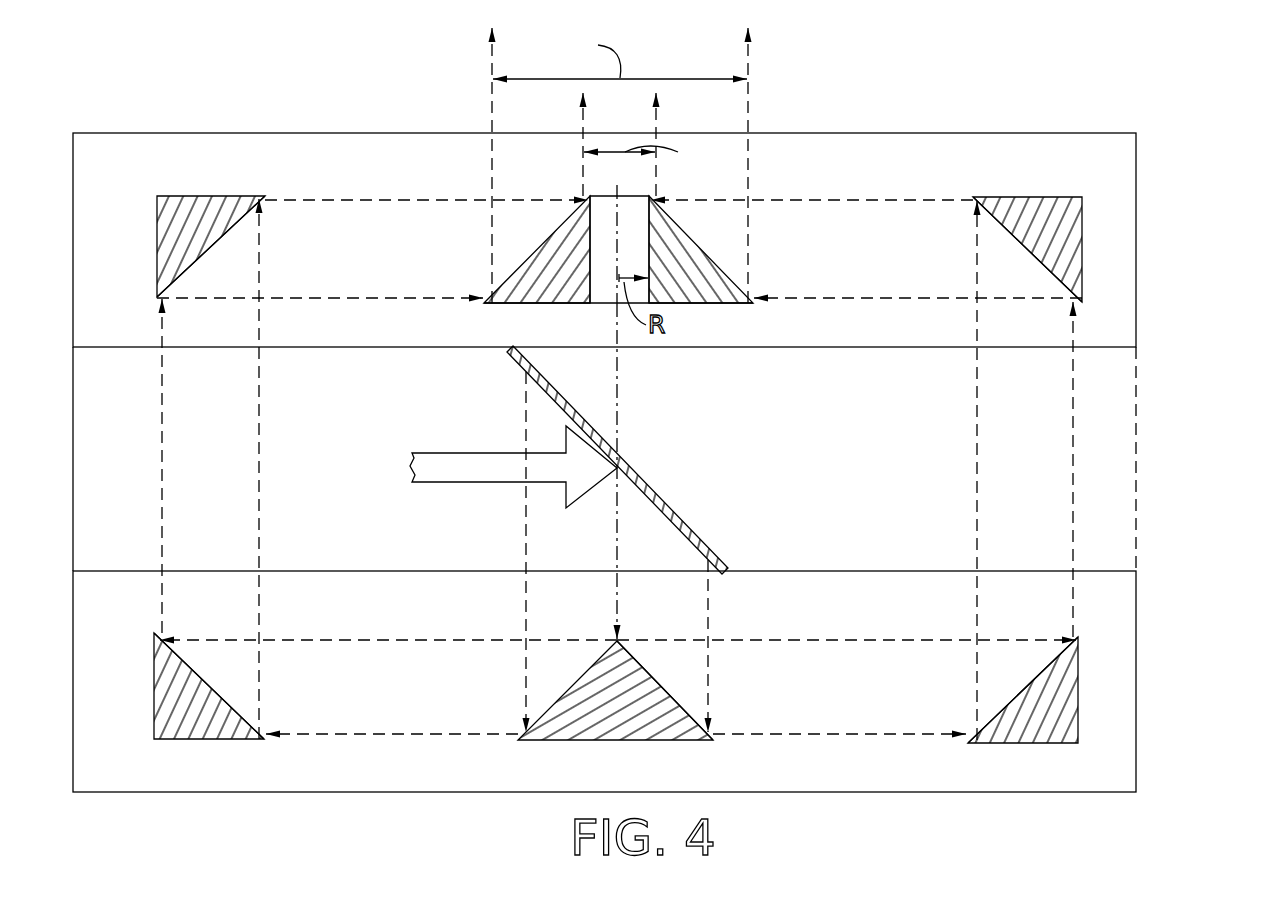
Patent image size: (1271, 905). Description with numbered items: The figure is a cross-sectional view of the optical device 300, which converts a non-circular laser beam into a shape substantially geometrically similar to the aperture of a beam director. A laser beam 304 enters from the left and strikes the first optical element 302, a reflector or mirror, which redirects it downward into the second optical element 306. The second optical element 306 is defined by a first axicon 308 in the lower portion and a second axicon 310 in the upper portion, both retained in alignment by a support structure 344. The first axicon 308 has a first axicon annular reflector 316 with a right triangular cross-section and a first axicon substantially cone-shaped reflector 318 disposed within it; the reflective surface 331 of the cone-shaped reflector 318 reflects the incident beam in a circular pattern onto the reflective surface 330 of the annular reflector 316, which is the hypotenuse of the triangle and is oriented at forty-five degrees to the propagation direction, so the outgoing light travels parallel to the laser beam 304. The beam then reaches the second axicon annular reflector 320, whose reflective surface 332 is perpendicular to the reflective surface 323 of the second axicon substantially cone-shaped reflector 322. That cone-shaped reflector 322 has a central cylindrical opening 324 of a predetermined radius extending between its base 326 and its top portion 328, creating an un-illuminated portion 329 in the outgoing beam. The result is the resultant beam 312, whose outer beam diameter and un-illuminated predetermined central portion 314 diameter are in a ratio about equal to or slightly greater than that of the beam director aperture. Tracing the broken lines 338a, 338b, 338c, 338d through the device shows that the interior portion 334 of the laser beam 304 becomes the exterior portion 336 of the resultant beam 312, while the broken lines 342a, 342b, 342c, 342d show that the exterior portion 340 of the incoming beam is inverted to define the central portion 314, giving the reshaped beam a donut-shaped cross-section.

The optical device 300 is at (868, 56).
The first optical element 302 is at (650, 483).
The laser beam 304 is at (453, 452).
The second optical element 306 is at (1142, 472).
The first axicon 308 is at (1052, 797).
The second axicon 310 is at (988, 131).
The resultant beam 312 is at (750, 99).
The predetermined central portion 314 is at (580, 123).
The first axicon annular reflector 316 is at (632, 710).
The first axicon substantially cone-shaped reflector 318 is at (646, 711).
The second axicon annular reflector 320 is at (605, 229).
The second axicon substantially cone-shaped reflector 322 is at (712, 255).
The reflective surface 323 is at (531, 255).
The central cylindrical opening 324 is at (640, 208).
The base 326 is at (700, 303).
The top portion 328 is at (590, 194).
The un-illuminated portion 329 is at (641, 122).
The reflective surface 330 is at (218, 695).
The reflective surface 331 is at (677, 703).
The reflective surface 332 is at (232, 234).
The interior portion 334 is at (612, 468).
The exterior portion 336 is at (748, 160).
The broken line 338a is at (617, 532).
The broken line 338b is at (827, 641).
The broken line 338c is at (1073, 470).
The broken line 338d is at (862, 297).
The exterior portion 340 is at (706, 574).
The broken line 342a is at (708, 652).
The broken line 342b is at (870, 740).
The broken line 342c is at (975, 520).
The broken line 342d is at (895, 200).
The support structure 344 is at (1137, 385).